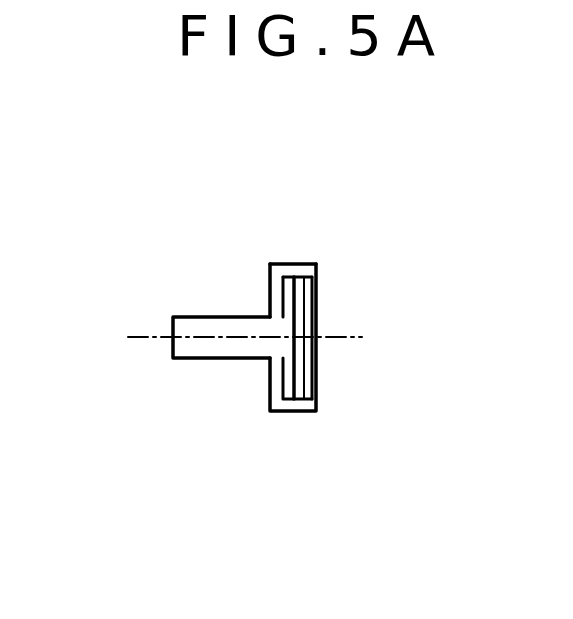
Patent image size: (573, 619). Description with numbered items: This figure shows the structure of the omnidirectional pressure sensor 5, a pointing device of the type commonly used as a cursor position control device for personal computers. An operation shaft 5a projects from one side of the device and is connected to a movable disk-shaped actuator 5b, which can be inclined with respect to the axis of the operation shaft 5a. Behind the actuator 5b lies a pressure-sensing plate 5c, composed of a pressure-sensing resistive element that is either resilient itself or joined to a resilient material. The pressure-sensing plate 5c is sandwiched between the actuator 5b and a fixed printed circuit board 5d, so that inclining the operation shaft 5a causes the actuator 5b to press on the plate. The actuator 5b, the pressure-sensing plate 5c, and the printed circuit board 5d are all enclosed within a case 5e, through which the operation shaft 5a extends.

The omnidirectional pressure sensor 5 is at (303, 262).
The operation shaft 5a is at (172, 343).
The movable disk-shaped actuator 5b is at (285, 380).
The pressure-sensing plate 5c is at (305, 300).
The printed circuit board 5d is at (315, 383).
The case 5e is at (283, 263).